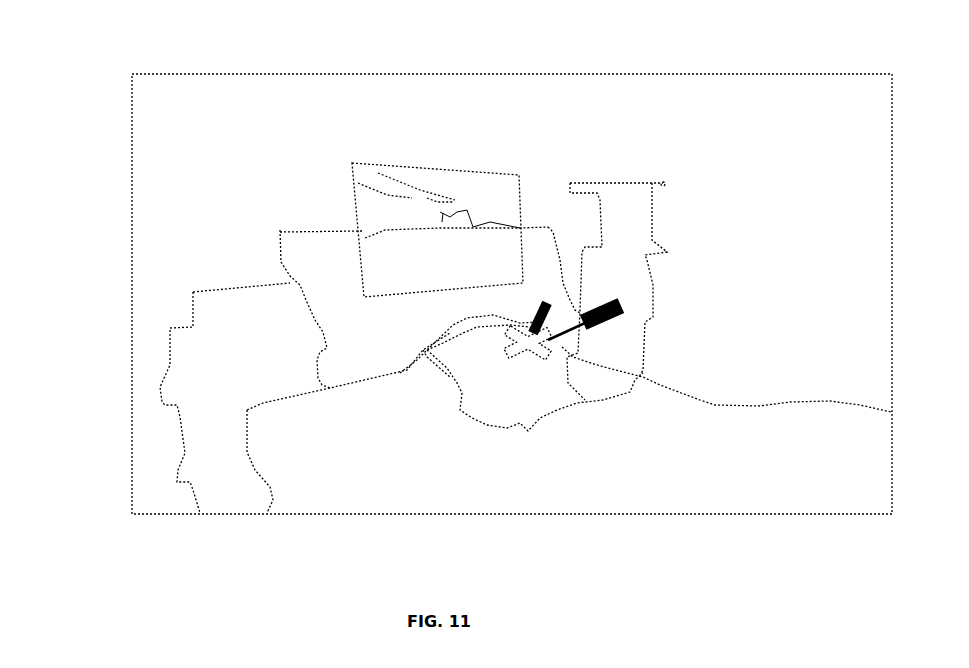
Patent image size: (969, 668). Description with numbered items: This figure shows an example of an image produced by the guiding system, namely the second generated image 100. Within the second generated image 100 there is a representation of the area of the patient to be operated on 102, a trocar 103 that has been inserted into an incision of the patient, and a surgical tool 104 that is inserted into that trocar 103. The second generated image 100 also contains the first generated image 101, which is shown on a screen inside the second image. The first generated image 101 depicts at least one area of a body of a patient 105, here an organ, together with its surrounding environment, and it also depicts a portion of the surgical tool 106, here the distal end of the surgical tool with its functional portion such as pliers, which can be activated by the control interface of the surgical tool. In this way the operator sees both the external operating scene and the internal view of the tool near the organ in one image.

The second generated image 100 is at (118, 124).
The first generated image 101 is at (413, 168).
The area of the patient to be operated on 102 is at (568, 358).
The trocar 103 is at (545, 302).
The surgical tool 104 is at (613, 300).
The area of a body of a patient 105 is at (428, 245).
The portion of the surgical tool 106 is at (412, 199).